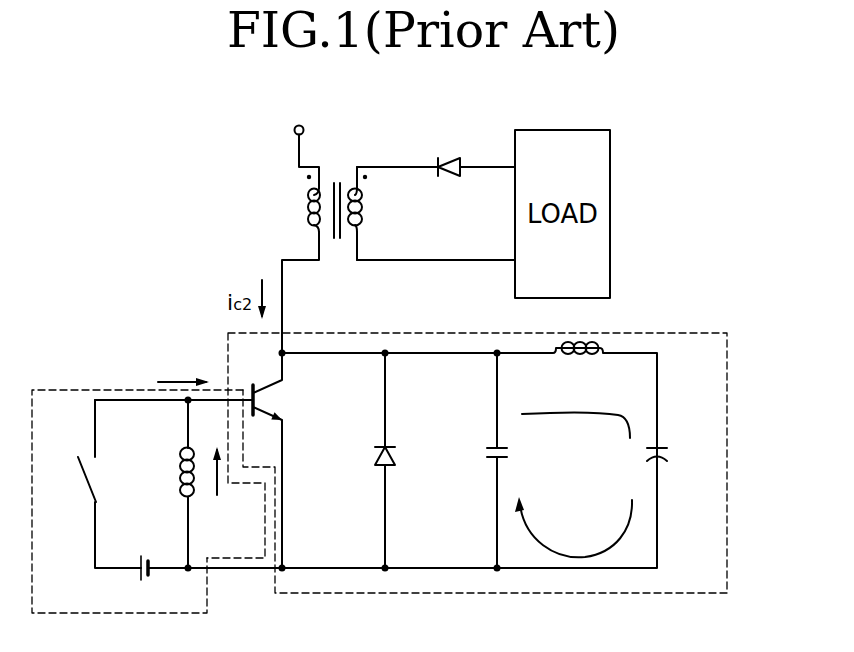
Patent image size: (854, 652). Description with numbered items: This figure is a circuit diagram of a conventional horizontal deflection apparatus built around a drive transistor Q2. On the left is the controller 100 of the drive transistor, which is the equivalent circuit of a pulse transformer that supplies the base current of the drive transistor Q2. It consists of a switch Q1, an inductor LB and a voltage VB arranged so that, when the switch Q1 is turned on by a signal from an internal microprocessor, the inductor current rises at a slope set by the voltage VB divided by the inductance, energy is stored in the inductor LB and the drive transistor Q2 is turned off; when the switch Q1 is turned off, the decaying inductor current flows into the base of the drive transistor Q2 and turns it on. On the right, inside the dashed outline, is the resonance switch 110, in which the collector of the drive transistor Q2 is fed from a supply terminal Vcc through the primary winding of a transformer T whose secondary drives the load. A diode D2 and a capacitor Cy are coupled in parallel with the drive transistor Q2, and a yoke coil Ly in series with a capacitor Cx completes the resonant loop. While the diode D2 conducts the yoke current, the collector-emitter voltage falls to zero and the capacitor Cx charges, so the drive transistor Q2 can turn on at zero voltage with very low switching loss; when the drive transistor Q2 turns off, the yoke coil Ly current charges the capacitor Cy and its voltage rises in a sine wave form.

The controller of the drive transistor 100 is at (70, 390).
The resonance switch 110 is at (727, 388).
The switch Q1 is at (90, 484).
The drive transistor Q2 is at (258, 460).
The inductor LB is at (168, 484).
The voltage VB is at (159, 583).
The diode D2 is at (399, 460).
The capacitor Cy is at (517, 460).
The capacitor Cx is at (634, 458).
The yoke coil Ly is at (580, 368).
The transformer T is at (324, 244).
The supply voltage terminal Vcc is at (291, 118).